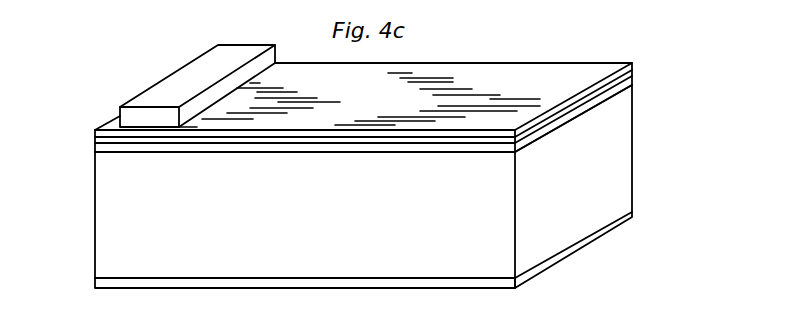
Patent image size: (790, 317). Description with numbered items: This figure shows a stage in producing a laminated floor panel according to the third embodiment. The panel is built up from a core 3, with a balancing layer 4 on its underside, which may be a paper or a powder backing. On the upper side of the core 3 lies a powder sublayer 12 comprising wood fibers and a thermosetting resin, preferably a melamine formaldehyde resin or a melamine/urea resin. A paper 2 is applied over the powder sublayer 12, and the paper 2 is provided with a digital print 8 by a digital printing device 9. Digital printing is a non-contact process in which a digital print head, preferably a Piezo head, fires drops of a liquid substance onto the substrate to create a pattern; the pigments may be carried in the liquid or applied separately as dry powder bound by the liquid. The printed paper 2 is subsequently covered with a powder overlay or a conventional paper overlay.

The paper 2 is at (637, 67).
The powder sublayer 12 is at (636, 86).
The core 3 is at (626, 162).
The balancing layer 4 is at (633, 215).
The digital print 8 is at (440, 78).
The digital printing device 9 is at (178, 86).